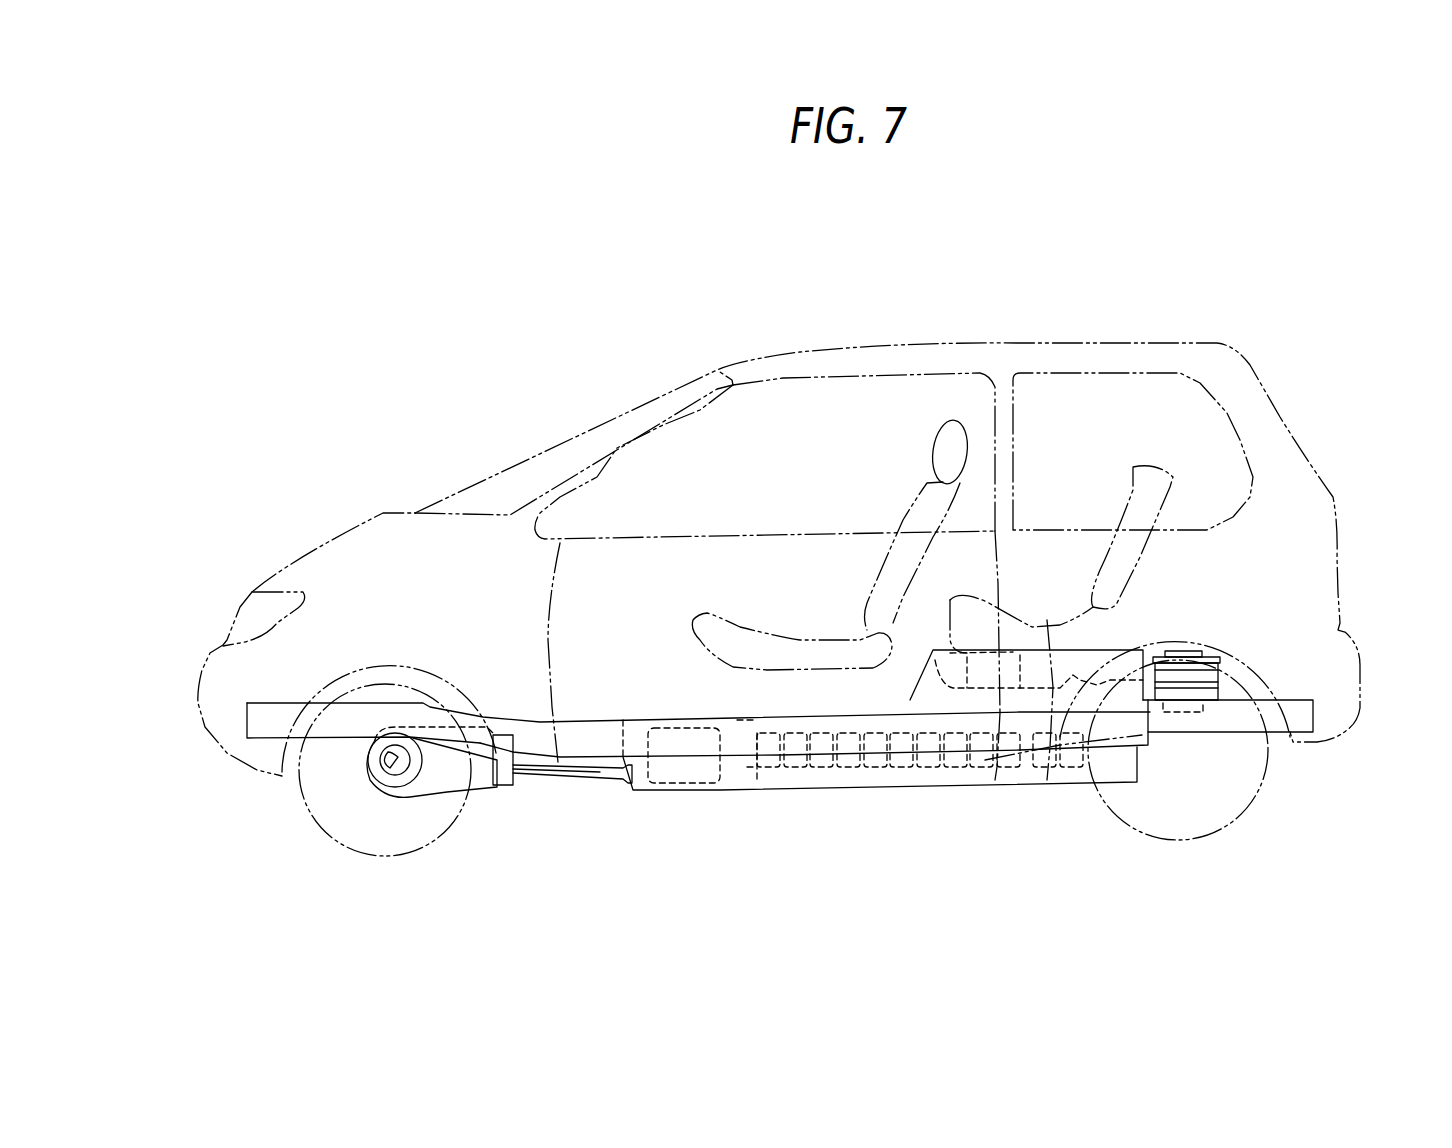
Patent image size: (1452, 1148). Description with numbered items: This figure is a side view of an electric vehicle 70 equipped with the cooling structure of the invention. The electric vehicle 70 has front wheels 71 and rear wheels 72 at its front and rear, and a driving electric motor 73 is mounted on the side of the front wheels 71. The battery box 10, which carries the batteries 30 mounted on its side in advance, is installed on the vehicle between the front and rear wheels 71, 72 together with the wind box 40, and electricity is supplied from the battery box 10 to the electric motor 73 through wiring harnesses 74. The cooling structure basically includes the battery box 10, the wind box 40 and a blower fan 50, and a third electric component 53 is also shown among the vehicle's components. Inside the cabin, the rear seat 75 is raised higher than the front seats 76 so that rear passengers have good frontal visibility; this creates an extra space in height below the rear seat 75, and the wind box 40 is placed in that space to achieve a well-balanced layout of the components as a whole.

The battery box 10 is at (918, 787).
The batteries 30 is at (1048, 780).
The wind box 40 is at (1128, 642).
The blower fan 50 is at (1185, 655).
The third electric component 53 is at (710, 790).
The electric vehicle 70 is at (797, 349).
The front wheels 71 is at (340, 847).
The rear wheels 72 is at (1245, 815).
The driving electric motor 73 is at (450, 797).
The wiring harnesses 74 is at (582, 780).
The rear seat 75 is at (1032, 627).
The front seats 76 is at (790, 637).